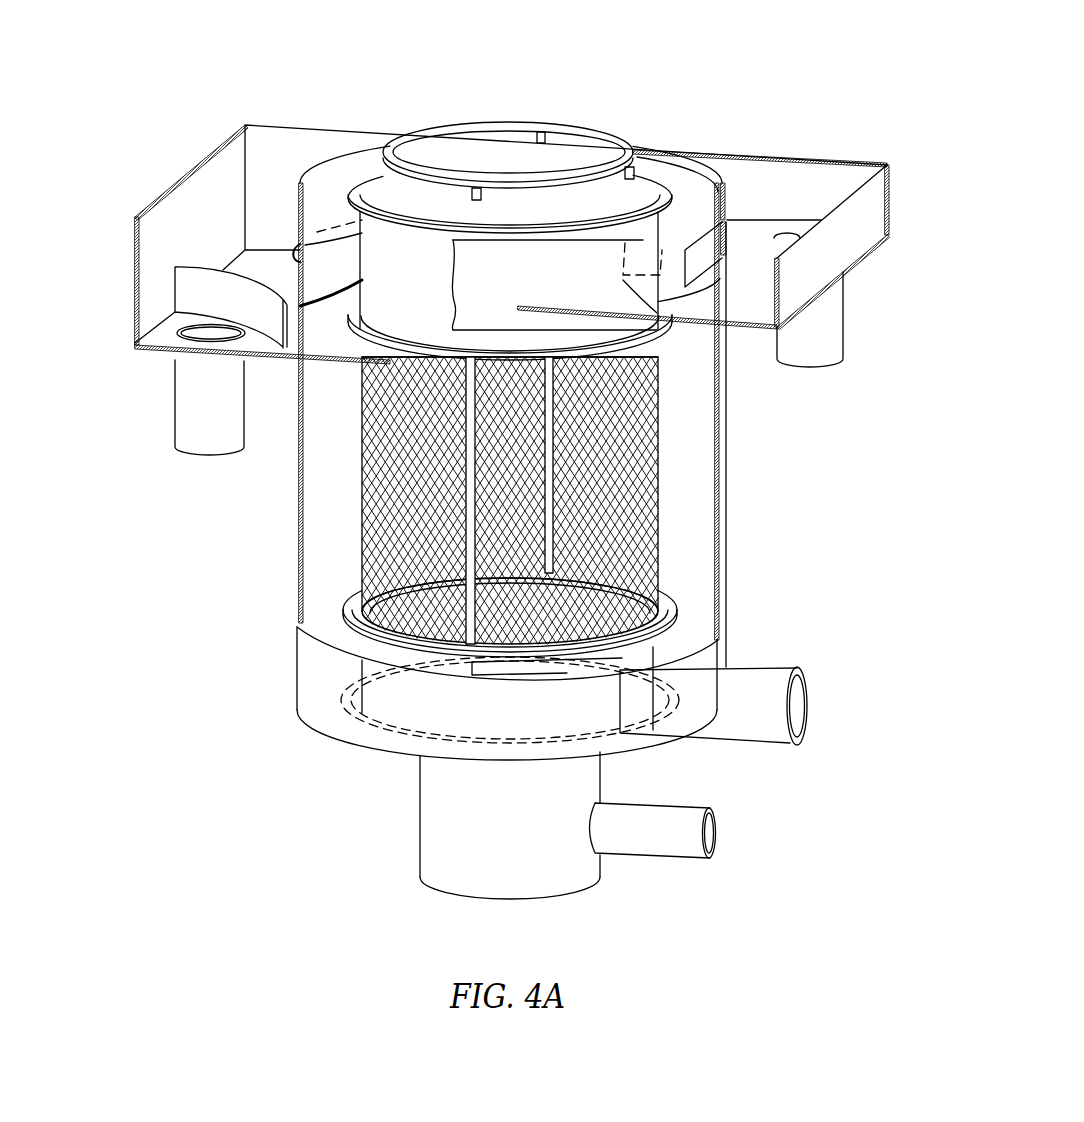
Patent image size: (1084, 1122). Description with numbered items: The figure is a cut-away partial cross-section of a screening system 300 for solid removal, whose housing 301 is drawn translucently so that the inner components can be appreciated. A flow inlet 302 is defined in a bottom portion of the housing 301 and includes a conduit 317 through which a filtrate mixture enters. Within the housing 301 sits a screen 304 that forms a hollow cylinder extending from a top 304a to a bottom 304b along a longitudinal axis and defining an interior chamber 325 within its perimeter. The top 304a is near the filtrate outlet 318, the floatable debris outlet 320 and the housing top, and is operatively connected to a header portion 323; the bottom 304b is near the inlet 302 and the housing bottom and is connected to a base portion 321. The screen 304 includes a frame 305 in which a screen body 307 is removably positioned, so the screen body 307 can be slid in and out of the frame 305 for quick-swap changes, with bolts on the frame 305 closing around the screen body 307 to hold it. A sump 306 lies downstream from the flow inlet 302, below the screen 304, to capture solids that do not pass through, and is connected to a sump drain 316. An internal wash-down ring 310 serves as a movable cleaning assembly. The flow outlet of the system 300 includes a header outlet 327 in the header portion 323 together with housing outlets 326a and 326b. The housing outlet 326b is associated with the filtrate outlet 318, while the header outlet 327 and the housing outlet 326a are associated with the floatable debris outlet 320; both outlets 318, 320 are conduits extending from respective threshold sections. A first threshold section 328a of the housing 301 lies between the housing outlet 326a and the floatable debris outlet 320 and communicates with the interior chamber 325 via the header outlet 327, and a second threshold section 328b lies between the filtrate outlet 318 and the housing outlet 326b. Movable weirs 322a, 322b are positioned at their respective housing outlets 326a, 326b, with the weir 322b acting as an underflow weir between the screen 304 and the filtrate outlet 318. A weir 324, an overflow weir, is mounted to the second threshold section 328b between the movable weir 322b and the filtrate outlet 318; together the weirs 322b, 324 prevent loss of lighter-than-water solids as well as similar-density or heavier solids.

The screening system 300 is at (501, 464).
The housing 301 is at (725, 495).
The flow inlet 302 is at (800, 714).
The screen 304 is at (522, 500).
The top of screen 304a is at (650, 368).
The bottom of screen 304b is at (650, 580).
The frame 305 is at (350, 618).
The sump 306 is at (428, 828).
The screen body 307 is at (367, 505).
The internal wash-down ring 310 is at (603, 116).
The sump drain 316 is at (668, 843).
The conduit 317 is at (760, 676).
The filtrate outlet 318 is at (183, 396).
The floatable debris outlet 320 is at (832, 327).
The base portion 321 is at (392, 718).
The movable weir 322a is at (735, 222).
The movable weir 322b is at (290, 250).
The header portion 323 is at (360, 193).
The weir 324 is at (192, 292).
The interior chamber 325 is at (650, 528).
The housing outlet 326a is at (703, 250).
The housing outlet 326b is at (319, 270).
The header outlet 327 is at (622, 268).
The first threshold section 328a is at (785, 226).
The second threshold section 328b is at (476, 274).